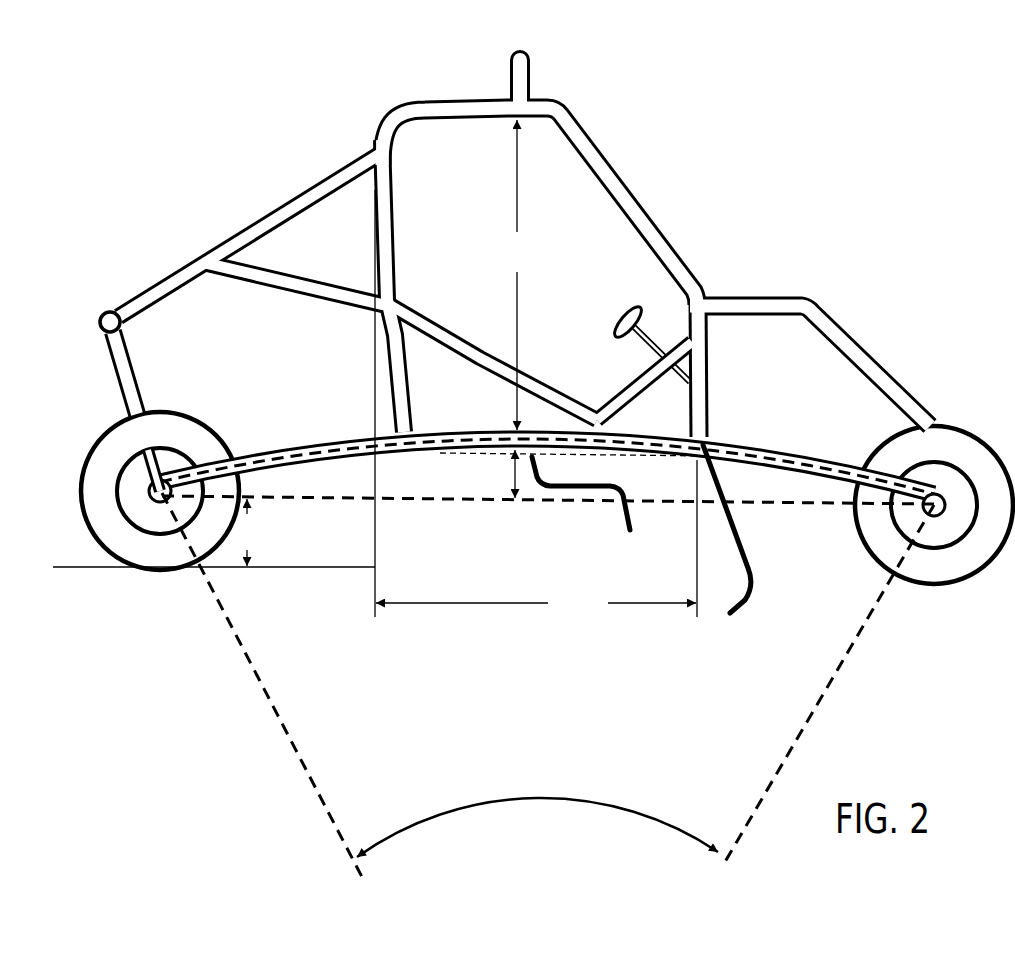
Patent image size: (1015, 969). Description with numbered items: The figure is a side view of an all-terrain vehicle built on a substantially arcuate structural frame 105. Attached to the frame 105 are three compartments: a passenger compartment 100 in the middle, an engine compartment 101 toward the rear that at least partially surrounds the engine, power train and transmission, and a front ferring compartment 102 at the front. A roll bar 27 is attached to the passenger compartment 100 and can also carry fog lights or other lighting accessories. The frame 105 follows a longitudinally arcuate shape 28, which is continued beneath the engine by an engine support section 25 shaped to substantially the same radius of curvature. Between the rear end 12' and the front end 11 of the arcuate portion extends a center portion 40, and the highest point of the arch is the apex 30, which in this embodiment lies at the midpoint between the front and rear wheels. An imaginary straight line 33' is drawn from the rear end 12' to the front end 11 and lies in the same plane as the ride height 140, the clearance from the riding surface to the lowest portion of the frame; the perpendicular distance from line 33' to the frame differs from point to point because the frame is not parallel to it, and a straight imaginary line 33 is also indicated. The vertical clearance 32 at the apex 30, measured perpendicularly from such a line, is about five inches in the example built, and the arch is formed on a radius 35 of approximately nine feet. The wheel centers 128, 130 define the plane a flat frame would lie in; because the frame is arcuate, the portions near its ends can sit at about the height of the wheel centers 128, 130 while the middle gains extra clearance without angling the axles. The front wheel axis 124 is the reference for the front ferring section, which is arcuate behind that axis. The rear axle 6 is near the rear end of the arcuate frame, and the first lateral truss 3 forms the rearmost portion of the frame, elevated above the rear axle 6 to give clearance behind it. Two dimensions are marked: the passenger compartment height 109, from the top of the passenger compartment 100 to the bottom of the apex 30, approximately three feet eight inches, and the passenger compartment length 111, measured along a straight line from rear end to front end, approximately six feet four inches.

The first lateral truss 3 is at (112, 323).
The rear axle 6 is at (150, 489).
The front end 11 is at (727, 546).
The rear end 12' is at (395, 351).
The engine support section 25 is at (413, 445).
The roll bar 27 is at (528, 64).
The arcuate shape 28 is at (822, 473).
The apex 30 is at (503, 447).
The clearance 32 is at (517, 457).
The straight imaginary line 33 is at (597, 507).
The imaginary straight line 33' is at (548, 560).
The radius 35 is at (626, 811).
The center portion 40 is at (382, 444).
The passenger compartment 100 is at (600, 248).
The engine compartment 101 is at (233, 327).
The front ferring compartment 102 is at (793, 356).
The substantially arcuate frame 105 is at (783, 463).
The passenger compartment height 109 is at (508, 275).
The passenger compartment length 111 is at (536, 403).
The front wheel axis 124 is at (631, 310).
The wheel center 128 is at (948, 510).
The wheel center 130 is at (203, 503).
The ride height 140 is at (214, 533).